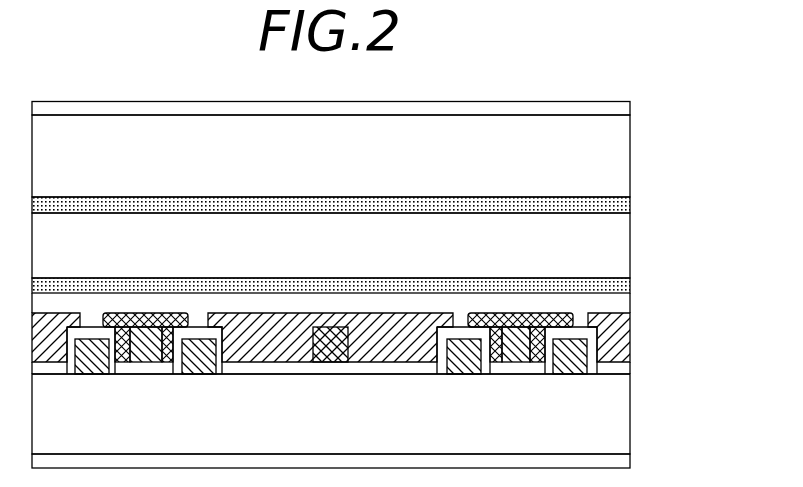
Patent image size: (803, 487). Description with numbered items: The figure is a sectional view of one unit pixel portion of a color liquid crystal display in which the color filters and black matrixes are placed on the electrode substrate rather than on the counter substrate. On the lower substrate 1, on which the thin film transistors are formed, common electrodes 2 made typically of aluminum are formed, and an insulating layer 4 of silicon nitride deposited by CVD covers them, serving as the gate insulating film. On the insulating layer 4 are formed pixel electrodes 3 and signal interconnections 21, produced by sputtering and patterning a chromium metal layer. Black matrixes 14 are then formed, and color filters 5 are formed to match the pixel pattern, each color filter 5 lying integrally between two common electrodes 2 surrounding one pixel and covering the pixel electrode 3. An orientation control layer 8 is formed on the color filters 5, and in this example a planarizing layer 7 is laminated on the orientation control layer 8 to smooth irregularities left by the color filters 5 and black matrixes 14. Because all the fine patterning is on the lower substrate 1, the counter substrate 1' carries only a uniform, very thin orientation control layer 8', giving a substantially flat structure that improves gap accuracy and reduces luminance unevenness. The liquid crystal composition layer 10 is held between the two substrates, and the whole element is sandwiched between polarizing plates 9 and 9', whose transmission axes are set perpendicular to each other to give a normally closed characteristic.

The substrate 1 is at (366, 414).
The counter substrate 1' is at (369, 156).
The common electrodes 2 is at (92, 356).
The pixel electrodes 3 is at (333, 352).
The insulating layer 4 is at (620, 370).
The color filters 5 is at (282, 314).
The planarizing layer 7 is at (618, 304).
The orientation control layer 8 is at (366, 285).
The orientation control layer 8' is at (369, 210).
The polarizing plate 9 is at (366, 462).
The polarizing plate 9' is at (369, 108).
The liquid crystal composition layer 10 is at (619, 251).
The black matrixes 14 is at (147, 310).
The signal interconnections 21 is at (519, 352).